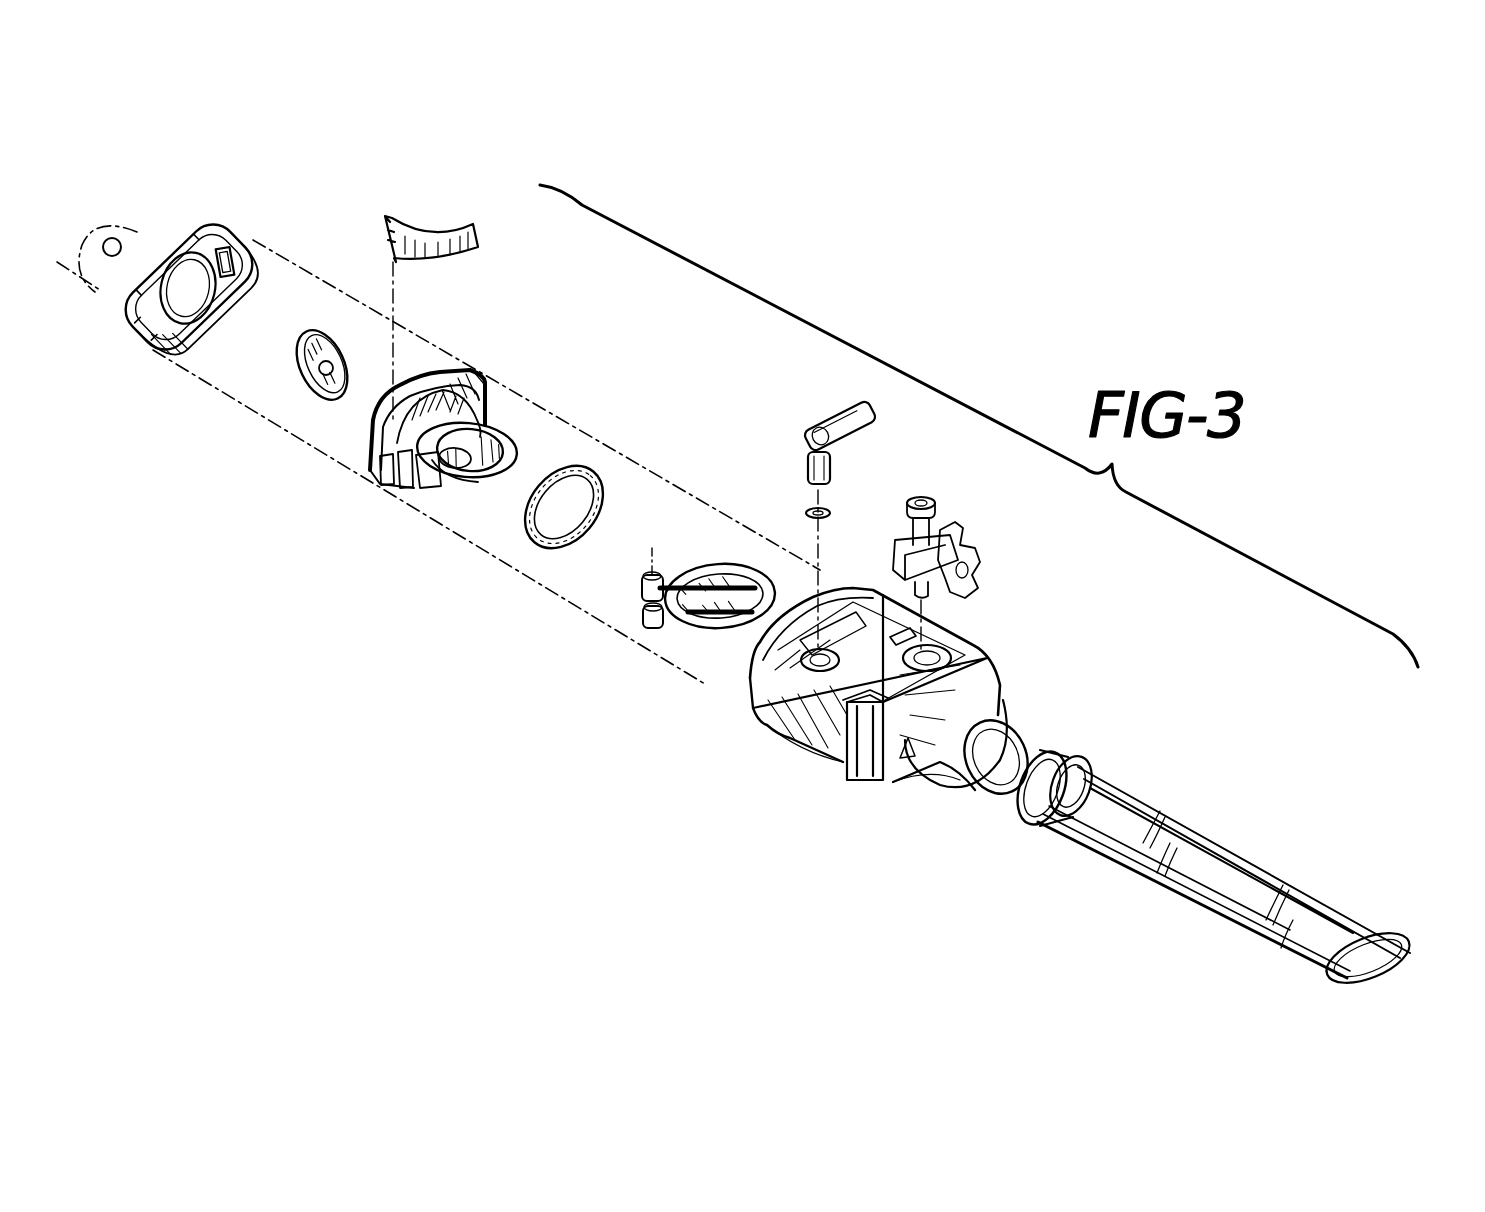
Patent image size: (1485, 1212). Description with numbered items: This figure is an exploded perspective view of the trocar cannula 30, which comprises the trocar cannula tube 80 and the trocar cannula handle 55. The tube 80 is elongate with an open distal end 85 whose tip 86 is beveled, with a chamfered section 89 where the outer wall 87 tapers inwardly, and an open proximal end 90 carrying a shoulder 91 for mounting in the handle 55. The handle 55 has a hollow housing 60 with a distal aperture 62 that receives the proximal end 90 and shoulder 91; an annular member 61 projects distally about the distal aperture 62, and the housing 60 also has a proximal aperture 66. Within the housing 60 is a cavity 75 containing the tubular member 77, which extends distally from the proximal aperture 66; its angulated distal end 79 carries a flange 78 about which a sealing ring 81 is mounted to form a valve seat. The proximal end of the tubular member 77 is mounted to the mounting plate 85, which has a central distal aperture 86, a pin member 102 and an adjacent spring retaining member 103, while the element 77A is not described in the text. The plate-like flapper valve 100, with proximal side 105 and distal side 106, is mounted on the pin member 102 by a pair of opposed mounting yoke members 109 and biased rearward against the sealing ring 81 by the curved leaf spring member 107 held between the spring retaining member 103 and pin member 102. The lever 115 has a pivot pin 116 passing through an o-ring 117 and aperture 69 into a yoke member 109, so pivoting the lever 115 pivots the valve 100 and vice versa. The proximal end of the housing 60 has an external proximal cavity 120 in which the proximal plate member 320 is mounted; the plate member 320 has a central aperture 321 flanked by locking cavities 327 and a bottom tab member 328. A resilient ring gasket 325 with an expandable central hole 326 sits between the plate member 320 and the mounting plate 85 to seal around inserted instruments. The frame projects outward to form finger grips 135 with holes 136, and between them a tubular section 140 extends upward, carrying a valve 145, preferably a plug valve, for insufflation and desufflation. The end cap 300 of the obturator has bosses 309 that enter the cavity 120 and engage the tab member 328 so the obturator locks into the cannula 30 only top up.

The trocar cannula 30 is at (343, 808).
The trocar cannula handle 55 is at (1008, 678).
The housing 60 is at (832, 770).
The annular member 61 is at (932, 772).
The distal aperture 62 is at (950, 768).
The proximal aperture 66 is at (753, 693).
The aperture 69 is at (803, 666).
The cavity 75 is at (900, 775).
The tubular member 77 is at (450, 420).
The tab of seal holder 77A is at (446, 490).
The flange 78 is at (527, 450).
The distal end of tubular member 79 is at (520, 438).
The trocar cannula tube 80 is at (1266, 850).
The sealing ring 81 is at (602, 496).
The mounting plate 85 is at (474, 372).
The central distal aperture 86 is at (468, 470).
The outer wall 87 is at (1165, 880).
The chamfered section 89 is at (1373, 980).
The proximal end 90 is at (1057, 750).
The shoulder 91 is at (1088, 775).
The flapper valve 100 is at (598, 597).
The pin member 102 is at (418, 482).
The spring retaining member 103 is at (372, 470).
The proximal side of flapper valve 105 is at (742, 562).
The distal side of flapper valve 106 is at (723, 623).
The spring member 107 is at (433, 233).
The mounting yoke members 109 is at (653, 628).
The lever 115 is at (835, 415).
The pivot pin 116 is at (835, 468).
The o-ring 117 is at (834, 512).
The external proximal cavity 120 is at (836, 592).
The finger grips 135 is at (985, 652).
The holes 136 is at (845, 735).
The tubular section 140 is at (942, 645).
The valve 145 is at (957, 536).
The end cap 300 is at (122, 208).
The bosses 309 is at (106, 290).
The proximal plate member 320 is at (224, 226).
The aperture 321 is at (212, 278).
The ring gasket 325 is at (306, 402).
The central hole 326 is at (326, 378).
The cavities 327 is at (252, 244).
The tab member 328 is at (192, 290).